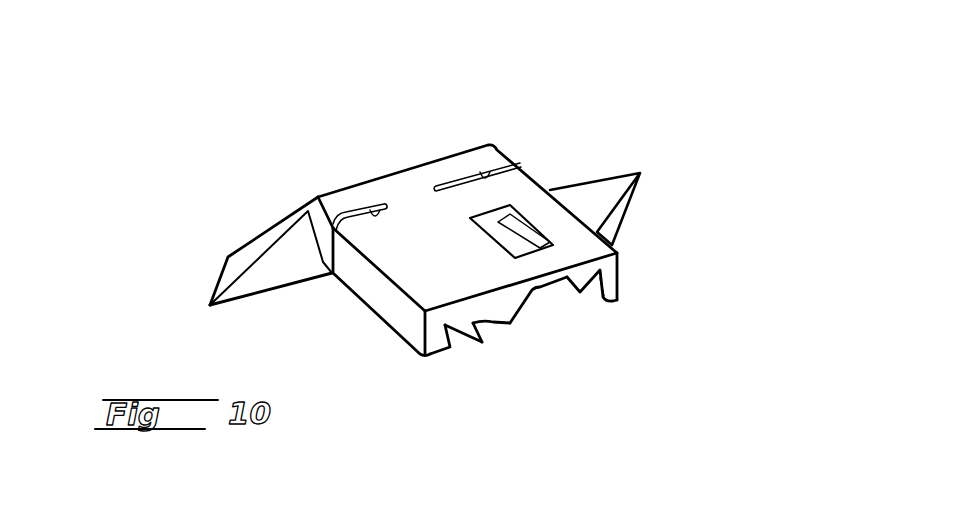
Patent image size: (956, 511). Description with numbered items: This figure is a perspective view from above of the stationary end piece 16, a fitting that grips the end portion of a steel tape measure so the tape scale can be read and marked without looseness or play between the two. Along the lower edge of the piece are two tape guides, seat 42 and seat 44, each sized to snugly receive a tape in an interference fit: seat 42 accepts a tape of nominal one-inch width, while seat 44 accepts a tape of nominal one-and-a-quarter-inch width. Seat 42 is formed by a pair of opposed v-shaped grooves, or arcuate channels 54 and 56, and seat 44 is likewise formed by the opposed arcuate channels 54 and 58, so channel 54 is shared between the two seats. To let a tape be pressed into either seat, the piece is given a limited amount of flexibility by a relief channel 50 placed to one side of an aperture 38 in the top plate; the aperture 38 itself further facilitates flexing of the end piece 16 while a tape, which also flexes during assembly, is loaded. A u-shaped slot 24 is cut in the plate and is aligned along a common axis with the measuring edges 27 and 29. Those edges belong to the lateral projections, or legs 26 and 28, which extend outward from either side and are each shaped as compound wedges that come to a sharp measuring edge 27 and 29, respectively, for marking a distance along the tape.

The end piece 16 is at (557, 124).
The u-shaped slot 24 is at (377, 203).
The leg 26 is at (652, 227).
The measuring edge 27 is at (596, 180).
The leg 28 is at (258, 204).
The measuring edge 29 is at (292, 283).
The aperture 38 is at (498, 230).
The seat 42 is at (497, 350).
The seat 44 is at (452, 371).
The relief channel 50 is at (543, 288).
The arcuate channel 54 is at (597, 300).
The arcuate channel 56 is at (488, 330).
The arcuate channel 58 is at (463, 337).